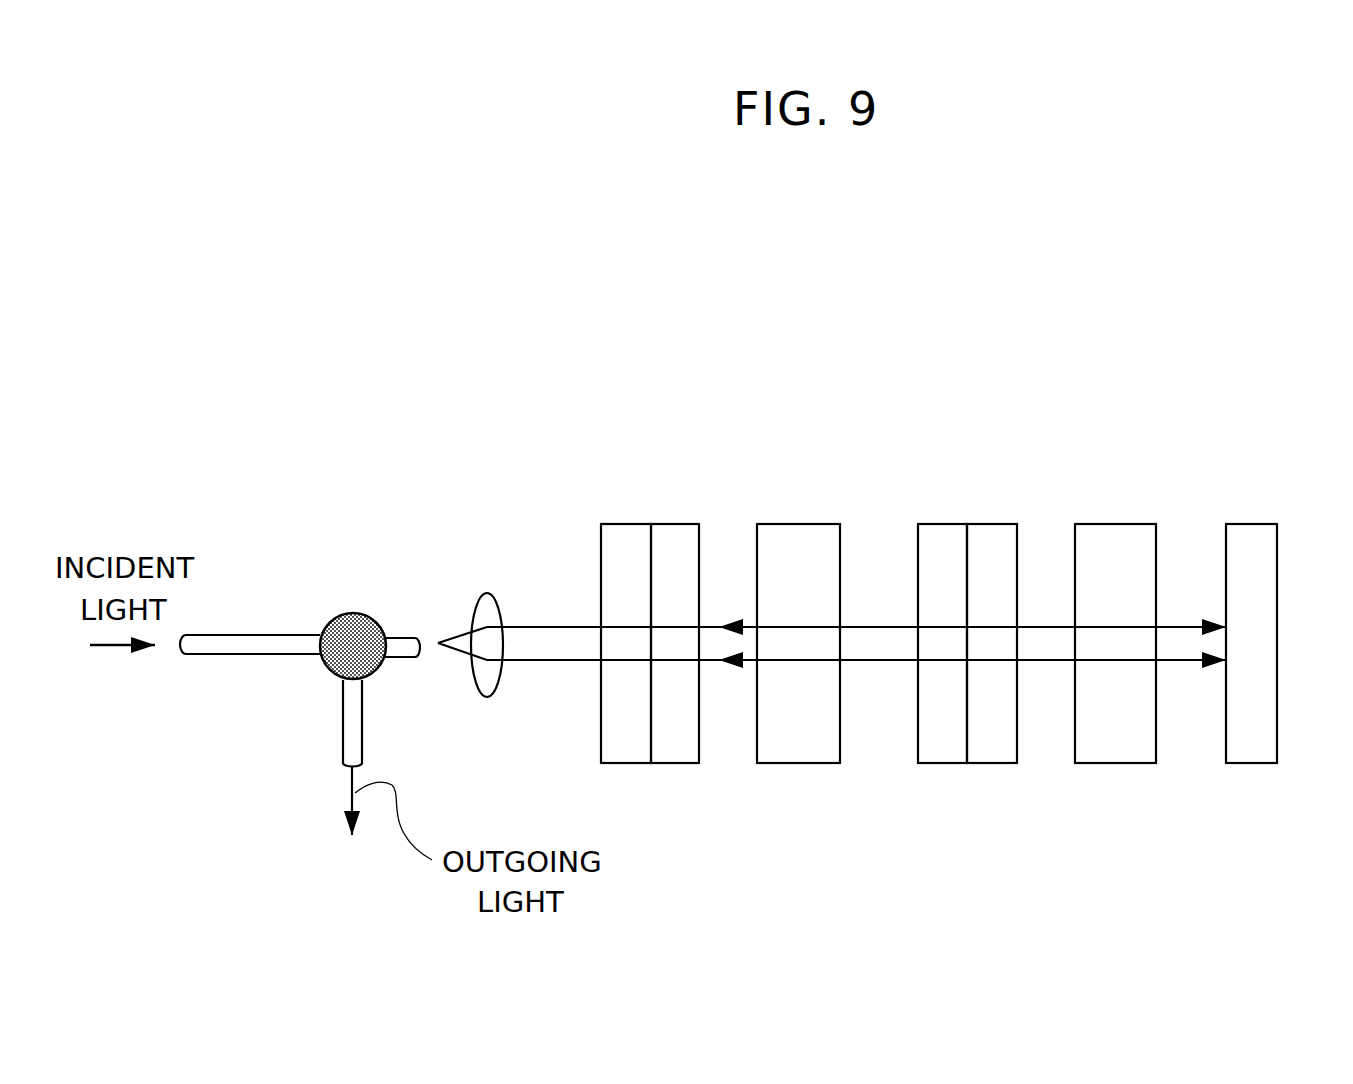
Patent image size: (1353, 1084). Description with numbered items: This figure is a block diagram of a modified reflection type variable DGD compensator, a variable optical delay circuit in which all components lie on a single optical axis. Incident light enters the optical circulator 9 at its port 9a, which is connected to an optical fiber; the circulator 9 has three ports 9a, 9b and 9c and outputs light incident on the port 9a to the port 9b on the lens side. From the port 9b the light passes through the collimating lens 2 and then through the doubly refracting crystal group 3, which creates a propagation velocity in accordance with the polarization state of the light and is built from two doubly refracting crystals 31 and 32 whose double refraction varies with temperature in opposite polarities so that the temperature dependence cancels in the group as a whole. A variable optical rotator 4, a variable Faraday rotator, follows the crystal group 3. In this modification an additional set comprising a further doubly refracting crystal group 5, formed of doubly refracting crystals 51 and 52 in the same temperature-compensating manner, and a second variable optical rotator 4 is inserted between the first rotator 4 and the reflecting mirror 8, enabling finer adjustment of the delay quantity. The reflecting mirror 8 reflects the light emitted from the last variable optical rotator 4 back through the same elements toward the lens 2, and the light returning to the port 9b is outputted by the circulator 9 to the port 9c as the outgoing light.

The collimating lens 2 is at (488, 595).
The doubly refracting crystal group 3 is at (653, 630).
The doubly refracting crystal 31 is at (625, 524).
The doubly refracting crystal 32 is at (675, 524).
The variable optical rotator 4 is at (799, 524).
The doubly refracting crystal group 5 is at (978, 630).
The doubly refracting crystal 51 is at (949, 524).
The doubly refracting crystal 52 is at (997, 524).
The reflecting mirror 8 is at (1253, 524).
The optical circulator 9 is at (353, 613).
The port 9a is at (274, 635).
The port 9b is at (405, 636).
The port 9c is at (347, 712).